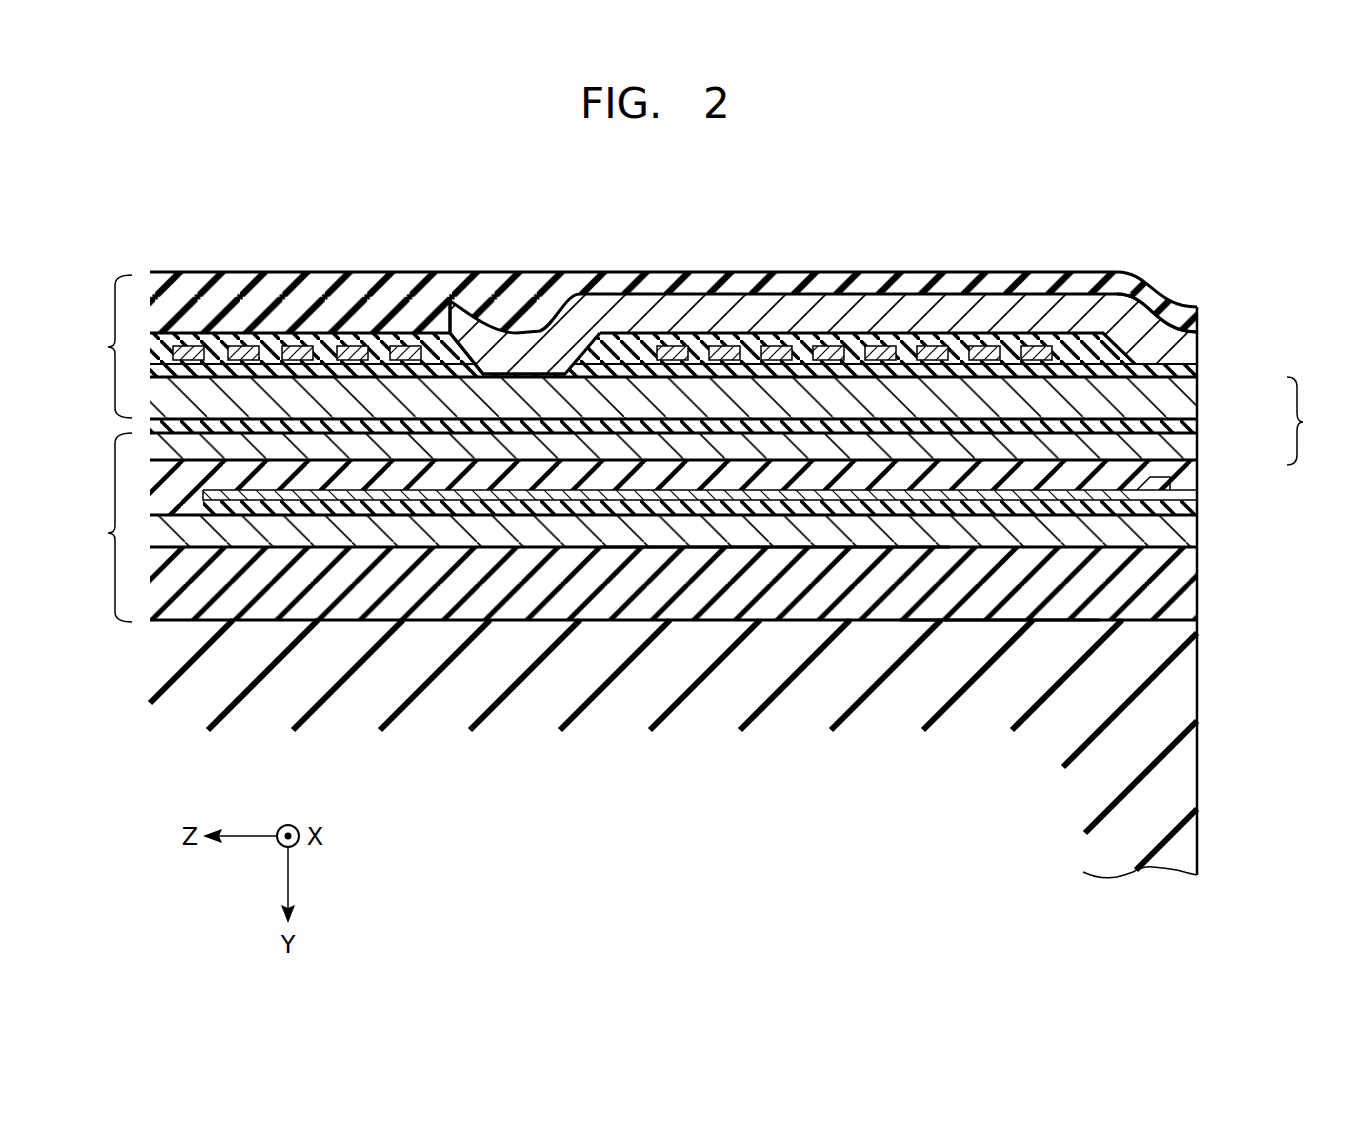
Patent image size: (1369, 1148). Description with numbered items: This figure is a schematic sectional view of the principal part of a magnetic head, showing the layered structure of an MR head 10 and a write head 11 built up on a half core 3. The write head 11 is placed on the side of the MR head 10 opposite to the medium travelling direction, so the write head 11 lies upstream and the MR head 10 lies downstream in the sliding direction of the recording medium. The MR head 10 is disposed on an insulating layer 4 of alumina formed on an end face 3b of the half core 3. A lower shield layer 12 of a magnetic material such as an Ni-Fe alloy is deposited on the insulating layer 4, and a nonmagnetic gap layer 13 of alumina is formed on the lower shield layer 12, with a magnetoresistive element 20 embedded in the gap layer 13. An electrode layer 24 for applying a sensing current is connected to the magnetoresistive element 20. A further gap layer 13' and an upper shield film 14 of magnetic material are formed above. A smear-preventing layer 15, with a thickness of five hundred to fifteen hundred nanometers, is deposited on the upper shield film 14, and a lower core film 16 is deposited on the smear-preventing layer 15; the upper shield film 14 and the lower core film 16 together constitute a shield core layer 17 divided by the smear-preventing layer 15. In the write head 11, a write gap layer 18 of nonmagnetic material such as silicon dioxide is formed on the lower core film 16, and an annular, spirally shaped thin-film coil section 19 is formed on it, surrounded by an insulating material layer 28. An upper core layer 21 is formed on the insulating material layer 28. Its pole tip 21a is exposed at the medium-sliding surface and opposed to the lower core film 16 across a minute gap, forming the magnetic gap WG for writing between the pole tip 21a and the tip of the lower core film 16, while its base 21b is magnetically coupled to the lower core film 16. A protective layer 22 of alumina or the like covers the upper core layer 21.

The half core 3 is at (1168, 683).
The end face of half core 3b is at (1000, 597).
The insulating layer 4 is at (1153, 598).
The MR head 10 is at (100, 527).
The write head 11 is at (100, 346).
The lower shield layer 12 is at (790, 538).
The gap layer 13 is at (718, 554).
The gap layer 13' is at (721, 491).
The upper shield film 14 is at (1180, 437).
The smear-preventing layer 15 is at (1130, 420).
The lower core film 16 is at (1180, 390).
The shield core layer 17 is at (1313, 421).
The write gap layer 18 is at (1087, 360).
The thin-film coil section 19 is at (297, 345).
The magnetoresistive element 20 is at (1180, 498).
The upper core layer 21 is at (734, 318).
The pole tip 21a is at (1193, 340).
The base of upper core layer 21b is at (520, 373).
The protective layer 22 is at (413, 310).
The electrode layer 24 is at (658, 497).
The insulating material layer 28 is at (163, 340).
The magnetic gap for writing WG is at (1197, 365).